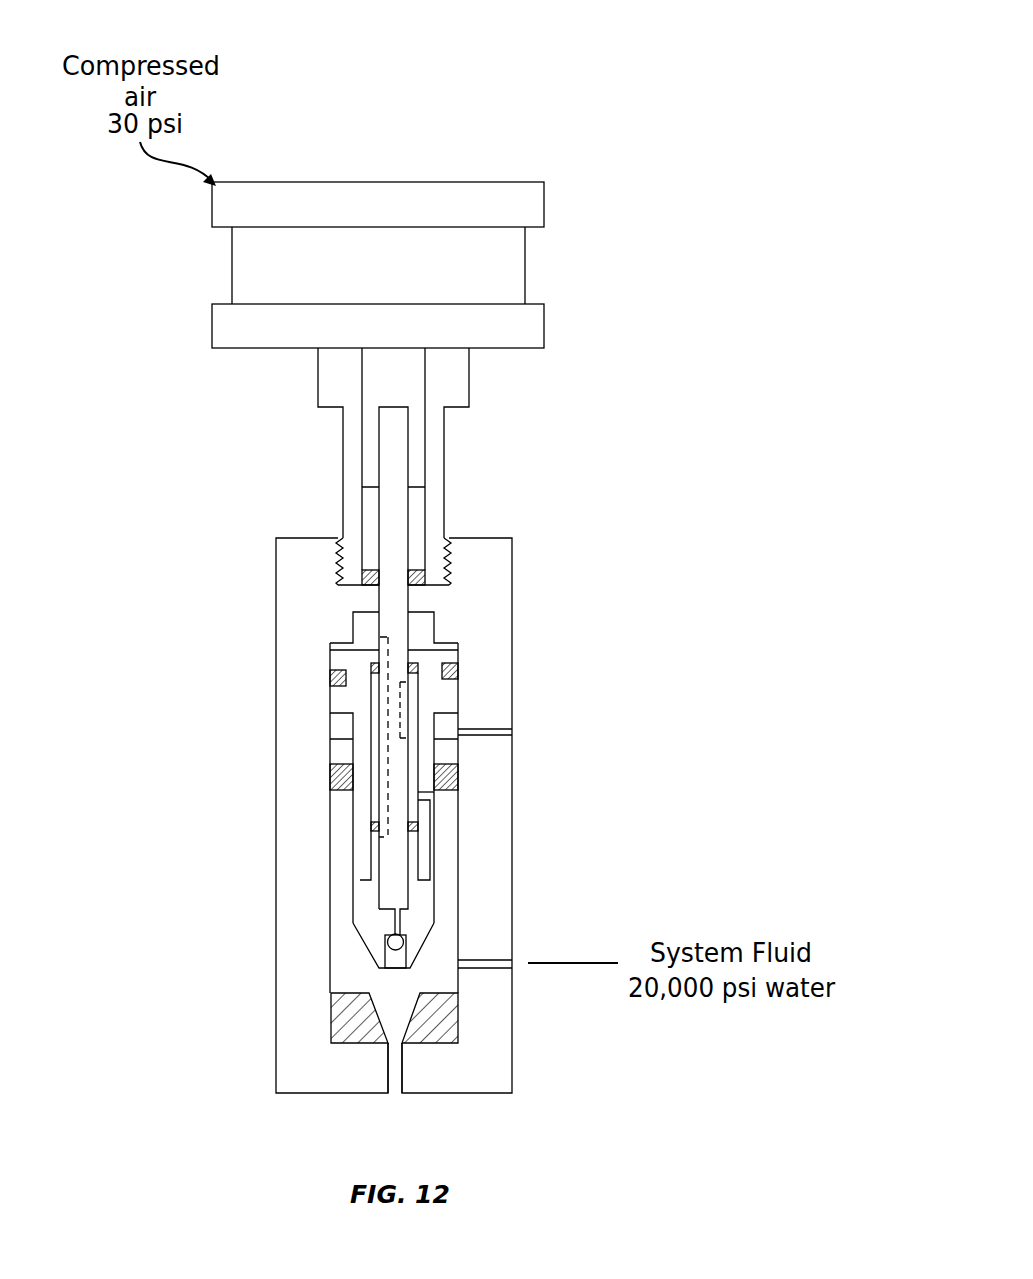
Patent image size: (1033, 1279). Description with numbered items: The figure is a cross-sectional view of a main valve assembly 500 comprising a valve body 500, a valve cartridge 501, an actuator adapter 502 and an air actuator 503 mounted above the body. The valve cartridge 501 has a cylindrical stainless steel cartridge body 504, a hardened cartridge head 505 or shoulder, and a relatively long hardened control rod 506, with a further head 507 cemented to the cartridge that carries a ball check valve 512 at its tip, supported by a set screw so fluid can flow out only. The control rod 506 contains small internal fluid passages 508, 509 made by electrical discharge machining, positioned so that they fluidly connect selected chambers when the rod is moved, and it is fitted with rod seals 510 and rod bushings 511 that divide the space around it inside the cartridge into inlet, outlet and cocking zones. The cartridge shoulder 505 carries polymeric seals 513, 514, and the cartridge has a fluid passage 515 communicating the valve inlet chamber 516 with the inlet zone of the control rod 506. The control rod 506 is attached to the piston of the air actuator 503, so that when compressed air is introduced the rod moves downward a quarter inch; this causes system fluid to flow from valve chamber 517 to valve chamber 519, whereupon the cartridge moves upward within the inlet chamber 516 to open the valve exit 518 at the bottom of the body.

The valve assembly 500 is at (698, 90).
The valve cartridge 501 is at (343, 728).
The actuator adapter 502 is at (448, 460).
The air actuator 503 is at (520, 193).
The cartridge body 504 is at (420, 742).
The cartridge head 505 is at (447, 701).
The control rod 506 is at (393, 508).
The head 507 is at (425, 920).
The internal fluid passage 508 is at (388, 750).
The internal fluid passage 509 is at (390, 690).
The rod seal 510 is at (380, 822).
The rod bushing 511 is at (365, 773).
The check valve 512 is at (372, 940).
The polymeric seal 513 is at (458, 672).
The polymeric seal 514 is at (460, 780).
The fluid passage 515 is at (420, 800).
The valve inlet chamber 516 is at (447, 897).
The valve chamber 517 is at (420, 626).
The valve exit 518 is at (393, 1093).
The valve chamber 519 is at (388, 906).